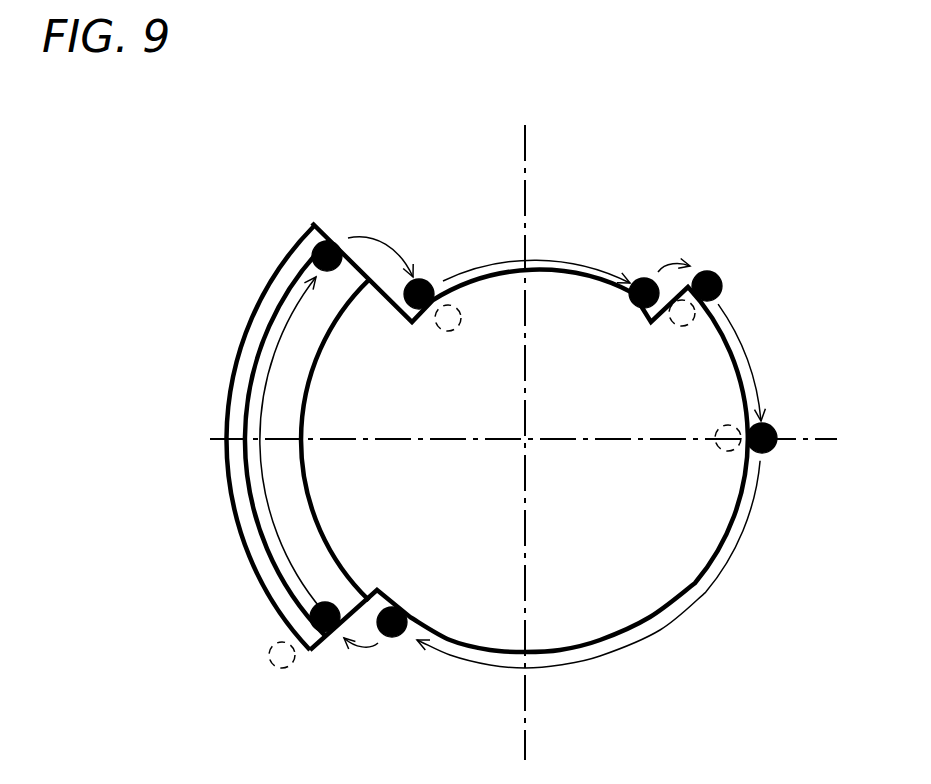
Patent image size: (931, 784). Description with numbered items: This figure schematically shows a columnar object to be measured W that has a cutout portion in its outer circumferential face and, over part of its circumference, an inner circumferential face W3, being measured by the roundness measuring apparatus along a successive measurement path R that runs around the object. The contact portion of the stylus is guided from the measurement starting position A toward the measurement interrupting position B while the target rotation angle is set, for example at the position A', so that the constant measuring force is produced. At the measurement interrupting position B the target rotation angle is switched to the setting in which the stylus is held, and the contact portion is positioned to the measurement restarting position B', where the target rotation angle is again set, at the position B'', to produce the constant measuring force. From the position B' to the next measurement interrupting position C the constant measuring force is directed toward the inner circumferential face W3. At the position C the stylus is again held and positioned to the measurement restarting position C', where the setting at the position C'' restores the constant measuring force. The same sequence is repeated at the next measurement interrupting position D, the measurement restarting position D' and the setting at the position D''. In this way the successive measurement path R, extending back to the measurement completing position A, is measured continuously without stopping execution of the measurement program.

The object to be measured W is at (595, 568).
The successive measurement path R is at (735, 548).
The inner circumferential face W3 is at (252, 523).
The measurement interrupting position C is at (362, 218).
The measurement restarting position C' is at (431, 250).
The setting position for constant measuring force C'' is at (466, 367).
The measurement interrupting position D is at (654, 244).
The measurement restarting position D' is at (750, 268).
The setting position for constant measuring force D'' is at (691, 363).
The measurement starting position A is at (799, 420).
The setting position for constant measuring force A' is at (683, 468).
The measurement interrupting position B is at (387, 668).
The measurement restarting position B' is at (342, 666).
The setting position for constant measuring force B'' is at (261, 697).